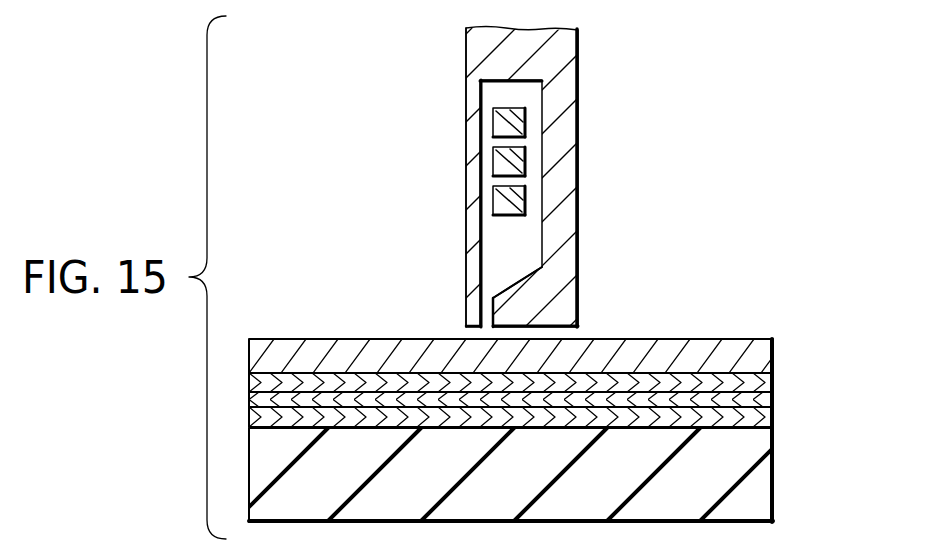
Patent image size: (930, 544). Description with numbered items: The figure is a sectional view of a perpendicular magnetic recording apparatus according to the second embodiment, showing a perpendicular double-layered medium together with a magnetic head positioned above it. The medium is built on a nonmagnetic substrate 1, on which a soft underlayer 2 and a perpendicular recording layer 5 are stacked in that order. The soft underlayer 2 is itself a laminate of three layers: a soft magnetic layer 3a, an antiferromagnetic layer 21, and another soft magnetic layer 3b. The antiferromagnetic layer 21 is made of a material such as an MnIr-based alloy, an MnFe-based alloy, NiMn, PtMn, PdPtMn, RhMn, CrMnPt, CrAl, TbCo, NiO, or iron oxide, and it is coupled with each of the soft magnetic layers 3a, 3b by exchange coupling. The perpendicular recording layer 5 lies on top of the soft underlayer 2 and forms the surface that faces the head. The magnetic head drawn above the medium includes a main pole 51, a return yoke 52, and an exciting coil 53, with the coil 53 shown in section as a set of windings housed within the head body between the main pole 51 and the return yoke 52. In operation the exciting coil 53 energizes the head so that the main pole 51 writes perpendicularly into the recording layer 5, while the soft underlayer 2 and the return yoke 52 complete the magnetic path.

The nonmagnetic substrate 1 is at (766, 495).
The soft underlayer 2 is at (569, 402).
The soft magnetic layer 3a is at (541, 429).
The soft magnetic layer 3b is at (775, 384).
The perpendicular recording layer 5 is at (780, 357).
The antiferromagnetic layer 21 is at (776, 398).
The main pole 51 is at (470, 131).
The return yoke 52 is at (569, 97).
The exciting coil 53 is at (496, 203).